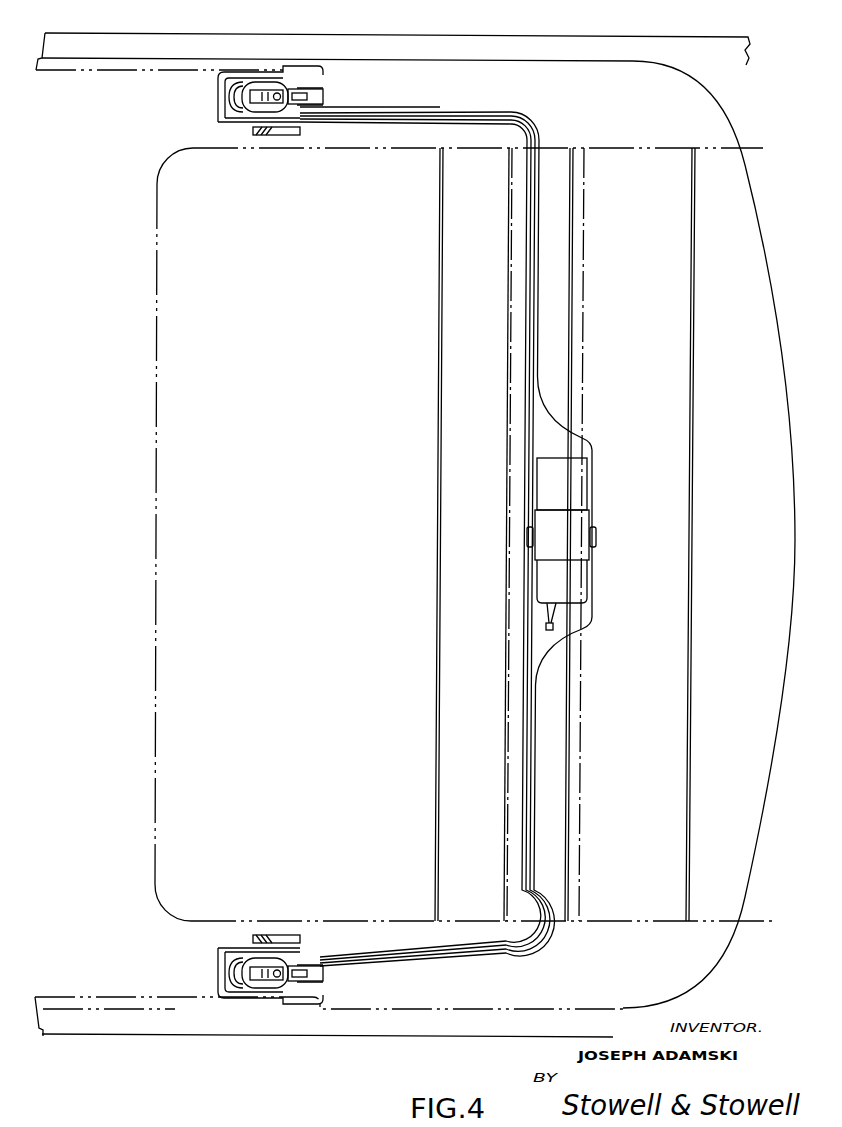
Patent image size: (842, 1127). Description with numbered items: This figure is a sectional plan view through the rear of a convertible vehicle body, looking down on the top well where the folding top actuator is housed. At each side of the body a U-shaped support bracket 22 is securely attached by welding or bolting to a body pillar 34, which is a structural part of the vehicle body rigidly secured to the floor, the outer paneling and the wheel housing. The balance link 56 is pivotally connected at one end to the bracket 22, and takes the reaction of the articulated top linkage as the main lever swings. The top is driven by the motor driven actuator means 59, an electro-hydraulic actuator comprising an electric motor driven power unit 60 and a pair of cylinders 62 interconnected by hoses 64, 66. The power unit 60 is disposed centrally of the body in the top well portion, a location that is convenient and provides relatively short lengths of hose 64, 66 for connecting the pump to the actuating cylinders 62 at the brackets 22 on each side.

The support bracket 22 is at (228, 121).
The body pillar 34 is at (218, 99).
The balance link 56 is at (272, 136).
The motor driven actuator means 59 is at (597, 578).
The power unit 60 is at (563, 535).
The cylinders 62 is at (240, 85).
The hose 64 is at (550, 415).
The hose 66 is at (528, 417).